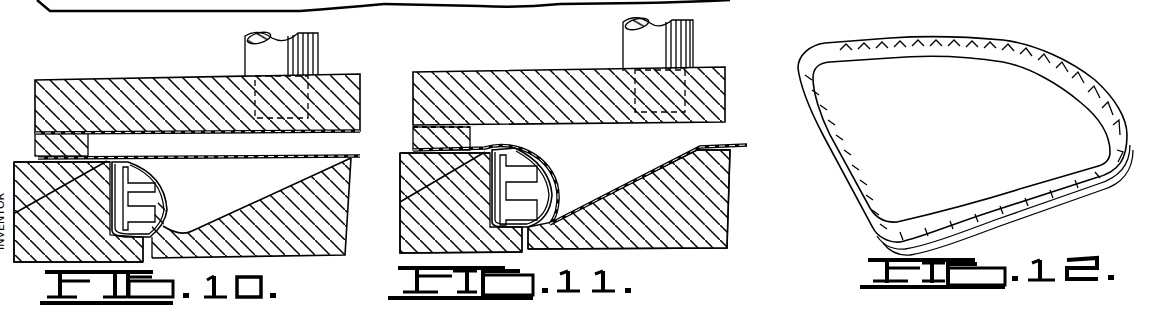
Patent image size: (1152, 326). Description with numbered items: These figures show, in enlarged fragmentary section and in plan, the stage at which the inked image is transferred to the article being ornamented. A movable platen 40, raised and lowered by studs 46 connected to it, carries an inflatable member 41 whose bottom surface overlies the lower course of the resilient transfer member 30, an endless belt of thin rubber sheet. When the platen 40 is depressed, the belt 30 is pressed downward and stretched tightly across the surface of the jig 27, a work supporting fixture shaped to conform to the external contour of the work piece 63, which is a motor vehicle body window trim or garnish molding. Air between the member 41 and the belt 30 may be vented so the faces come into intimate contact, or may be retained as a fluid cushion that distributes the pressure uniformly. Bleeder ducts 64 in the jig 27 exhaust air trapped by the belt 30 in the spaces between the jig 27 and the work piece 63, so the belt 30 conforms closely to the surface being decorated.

In FIG. 10, the jig or fixture or work supporting table 27 is at (61, 191).
In FIG. 11, the jig or fixture or work supporting table 27 is at (403, 186).
In FIG. 10, the resilient transfer member 30 is at (35, 158).
In FIG. 11, the resilient transfer member 30 is at (413, 150).
In FIG. 10, the movable platen 40 is at (90, 80).
In FIG. 11, the movable platen 40 is at (521, 71).
In FIG. 10, the inflatable member 41 is at (190, 128).
In FIG. 11, the inflatable member 41 is at (540, 170).
In FIG. 10, the studs 46 is at (318, 43).
In FIG. 11, the studs 46 is at (693, 35).
In FIG. 10, the object or work piece 63 is at (160, 188).
In FIG. 11, the object or work piece 63 is at (503, 207).
In FIG. 12, the object or work piece 63 is at (840, 156).
In FIG. 10, the air release or bleeder ducts 64 is at (170, 257).
In FIG. 11, the air release or bleeder ducts 64 is at (400, 208).